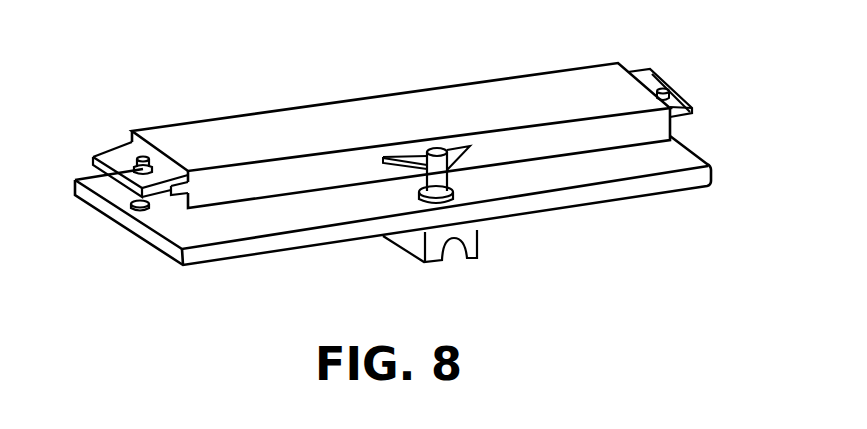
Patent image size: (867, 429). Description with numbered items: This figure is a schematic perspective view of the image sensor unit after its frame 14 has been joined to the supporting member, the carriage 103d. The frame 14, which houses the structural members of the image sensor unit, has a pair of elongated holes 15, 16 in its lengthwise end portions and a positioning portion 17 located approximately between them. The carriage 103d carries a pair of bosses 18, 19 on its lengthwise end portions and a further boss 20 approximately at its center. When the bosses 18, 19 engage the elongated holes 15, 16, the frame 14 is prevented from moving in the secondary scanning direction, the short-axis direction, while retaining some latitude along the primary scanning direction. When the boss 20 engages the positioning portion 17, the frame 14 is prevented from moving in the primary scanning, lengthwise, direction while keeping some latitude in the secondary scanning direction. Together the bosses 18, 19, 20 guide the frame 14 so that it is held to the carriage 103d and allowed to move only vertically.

The frame 14 is at (213, 128).
The elongated hole 15 is at (122, 184).
The elongated hole 16 is at (672, 93).
The positioning portion 17 is at (420, 152).
The boss 18 is at (124, 157).
The boss 19 is at (661, 82).
The boss 20 is at (416, 184).
The carriage 103d is at (604, 206).